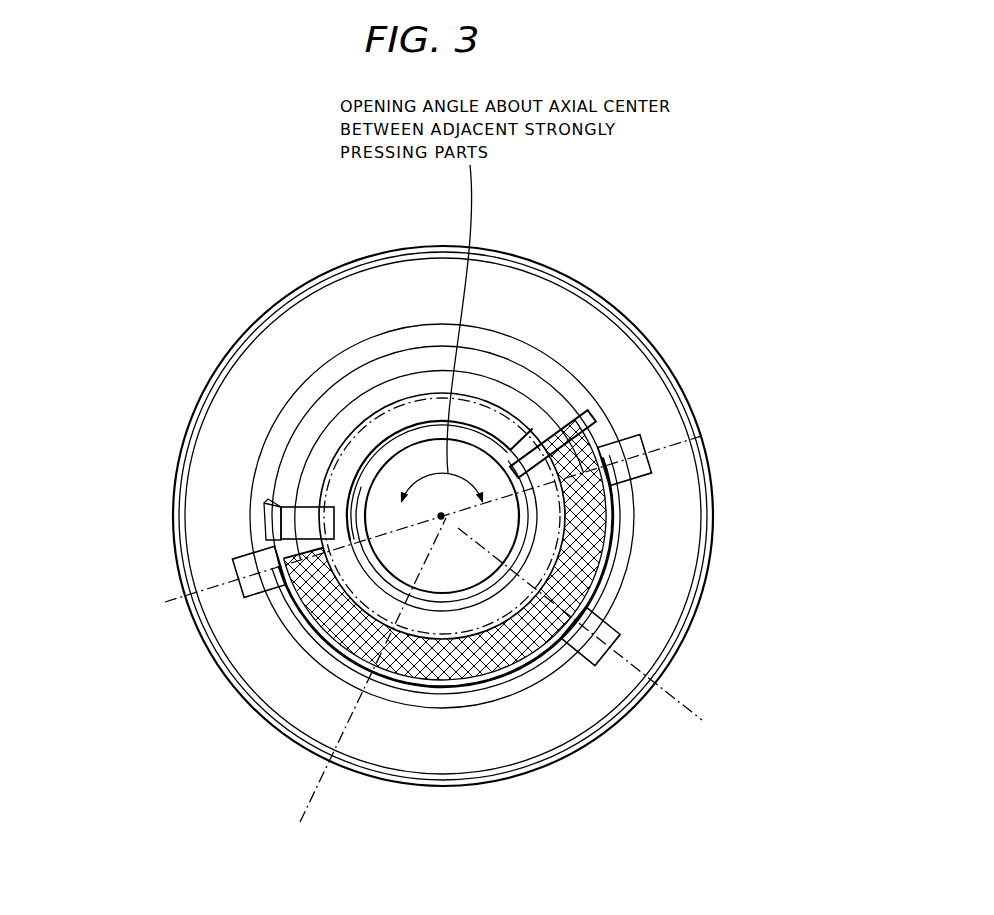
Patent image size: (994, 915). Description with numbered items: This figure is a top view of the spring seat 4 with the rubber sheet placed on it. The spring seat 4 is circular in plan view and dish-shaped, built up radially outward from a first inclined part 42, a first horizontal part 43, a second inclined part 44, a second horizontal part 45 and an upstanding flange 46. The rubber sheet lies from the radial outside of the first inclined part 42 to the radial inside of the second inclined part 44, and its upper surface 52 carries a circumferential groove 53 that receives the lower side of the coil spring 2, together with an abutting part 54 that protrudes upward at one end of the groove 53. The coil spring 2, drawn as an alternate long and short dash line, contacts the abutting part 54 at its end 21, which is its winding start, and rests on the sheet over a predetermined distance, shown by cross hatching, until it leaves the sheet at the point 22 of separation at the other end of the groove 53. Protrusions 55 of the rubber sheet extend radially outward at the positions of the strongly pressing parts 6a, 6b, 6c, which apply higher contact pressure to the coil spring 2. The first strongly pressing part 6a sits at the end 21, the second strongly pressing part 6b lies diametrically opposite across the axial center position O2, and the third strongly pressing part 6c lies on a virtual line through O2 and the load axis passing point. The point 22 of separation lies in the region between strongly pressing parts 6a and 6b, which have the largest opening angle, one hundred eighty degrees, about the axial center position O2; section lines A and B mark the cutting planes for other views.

The coil spring 2 is at (277, 622).
The spring seat 4 is at (630, 275).
The first strongly pressing part 6a is at (223, 573).
The second strongly pressing part 6b is at (646, 430).
The third strongly pressing part 6c is at (595, 672).
The end of the coil spring 21 is at (253, 562).
The point of separation 22 is at (592, 415).
The first inclined part 42 is at (417, 433).
The first horizontal part 43 is at (305, 403).
The second inclined part 44 is at (252, 356).
The second horizontal part 45 is at (237, 387).
The flange 46 is at (190, 418).
The upper surface of the rubber sheet 52 is at (526, 670).
The groove 53 is at (450, 672).
The abutting part 54 is at (288, 520).
The protrusions 55 is at (247, 600).
The axial center position O2 is at (441, 530).
The section line A- A is at (299, 808).
The section line B- B is at (692, 715).